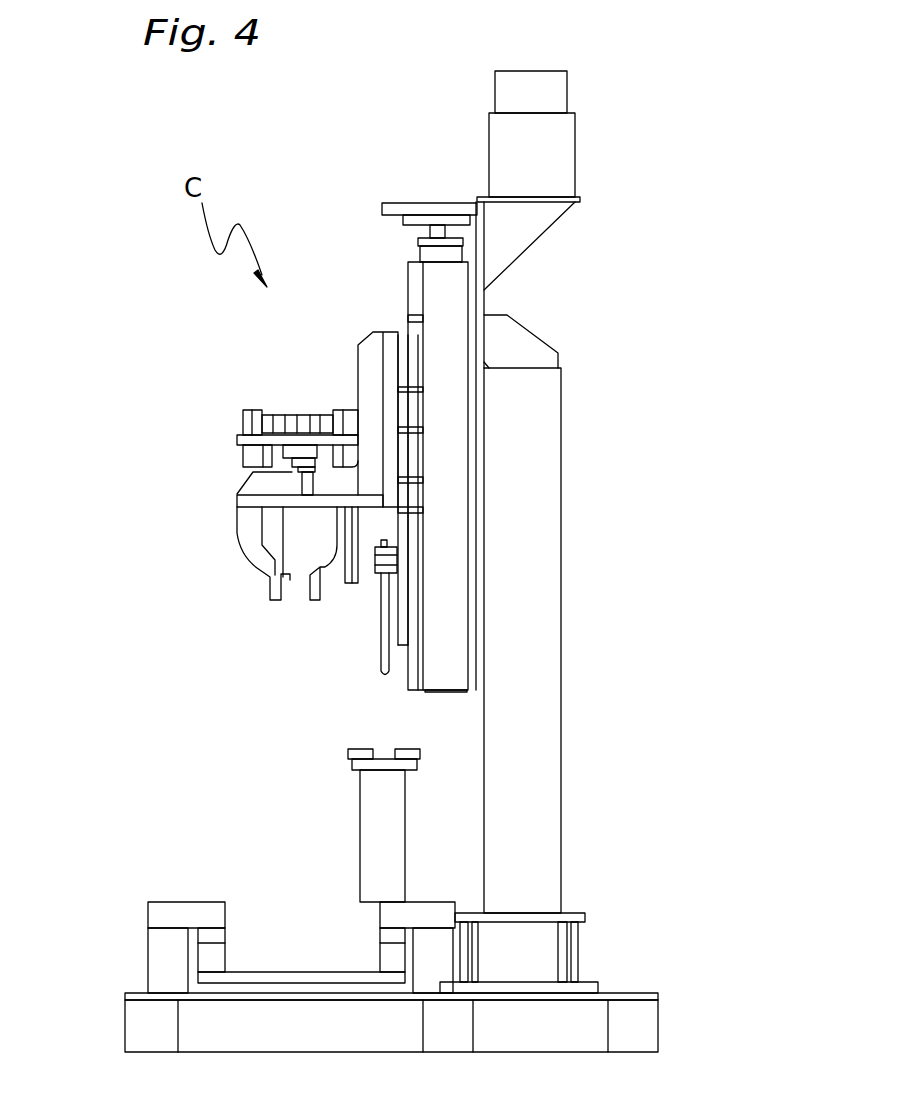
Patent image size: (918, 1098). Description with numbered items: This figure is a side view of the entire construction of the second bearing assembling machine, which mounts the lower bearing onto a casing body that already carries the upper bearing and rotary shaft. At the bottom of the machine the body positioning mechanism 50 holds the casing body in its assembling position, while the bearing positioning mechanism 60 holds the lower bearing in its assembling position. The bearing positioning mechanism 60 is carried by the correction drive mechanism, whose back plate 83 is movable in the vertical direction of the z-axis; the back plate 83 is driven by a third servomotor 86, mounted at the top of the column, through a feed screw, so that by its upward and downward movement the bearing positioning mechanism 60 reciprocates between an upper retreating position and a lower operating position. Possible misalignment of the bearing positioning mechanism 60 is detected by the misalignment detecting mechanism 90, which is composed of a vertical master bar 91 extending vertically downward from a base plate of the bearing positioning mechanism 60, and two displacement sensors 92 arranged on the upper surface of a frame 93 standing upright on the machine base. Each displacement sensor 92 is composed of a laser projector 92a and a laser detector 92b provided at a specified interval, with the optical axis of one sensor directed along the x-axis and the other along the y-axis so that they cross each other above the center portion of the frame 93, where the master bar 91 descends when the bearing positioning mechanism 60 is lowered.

The body positioning mechanism 50 is at (178, 963).
The bearing positioning mechanism 60 is at (231, 522).
The back plate 83 is at (400, 372).
The third servomotor 86 is at (568, 158).
The misalignment detecting mechanism 90 is at (235, 721).
The vertical master bar 91 is at (378, 637).
The displacement sensor 92 is at (280, 717).
The laser projector 92a is at (372, 748).
The laser detector 92b is at (406, 748).
The frame 93 is at (372, 820).